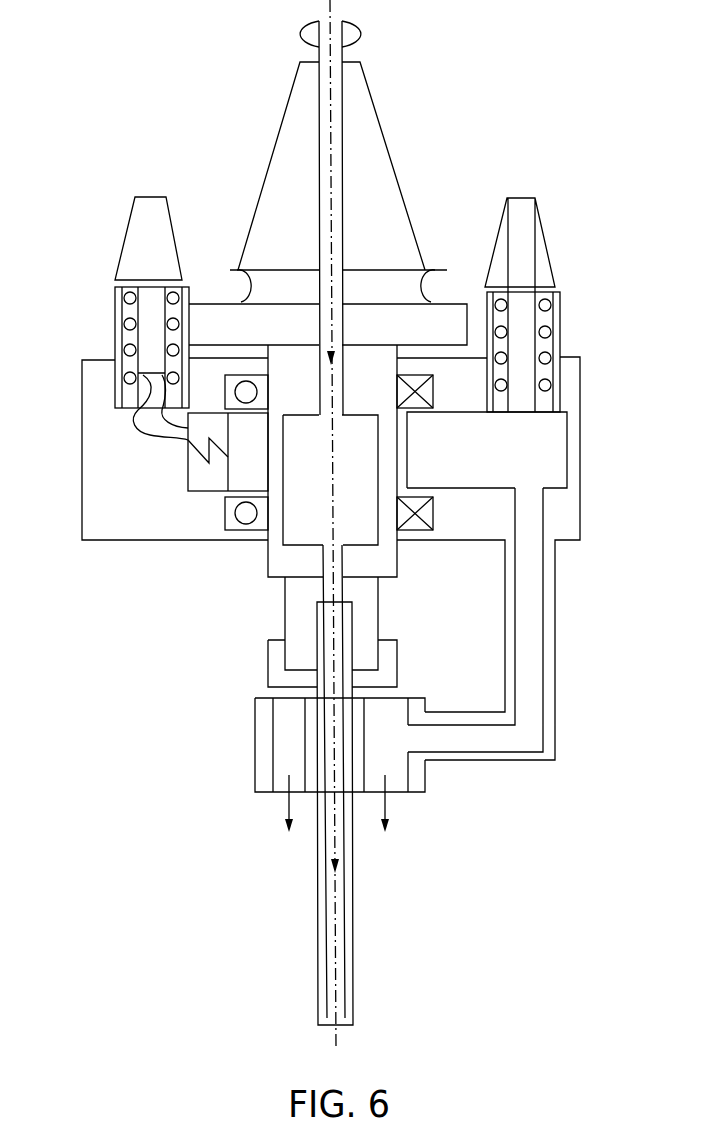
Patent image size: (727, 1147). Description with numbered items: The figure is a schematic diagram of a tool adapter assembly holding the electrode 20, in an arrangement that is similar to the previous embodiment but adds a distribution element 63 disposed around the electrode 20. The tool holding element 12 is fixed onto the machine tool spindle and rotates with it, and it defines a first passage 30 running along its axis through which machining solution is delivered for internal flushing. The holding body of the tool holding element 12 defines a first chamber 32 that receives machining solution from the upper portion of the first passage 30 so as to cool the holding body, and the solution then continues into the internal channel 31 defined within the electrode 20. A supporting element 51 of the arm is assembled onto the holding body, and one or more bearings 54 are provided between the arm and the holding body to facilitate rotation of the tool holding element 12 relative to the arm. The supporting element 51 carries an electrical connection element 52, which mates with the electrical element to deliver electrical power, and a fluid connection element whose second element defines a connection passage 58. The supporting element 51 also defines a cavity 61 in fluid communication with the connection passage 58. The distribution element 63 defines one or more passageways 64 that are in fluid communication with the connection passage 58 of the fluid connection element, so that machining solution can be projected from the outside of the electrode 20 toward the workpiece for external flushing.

The tool holding element 12 is at (382, 125).
The first passage 30 is at (330, 130).
The connection passage 58 is at (527, 233).
The electrical connection element 52 is at (90, 357).
The supporting element 51 is at (82, 448).
The cavity 61 is at (552, 445).
The first chamber 32 is at (297, 483).
The bearing 54 is at (418, 532).
The passageway 64 is at (397, 738).
The distribution element 63 is at (255, 743).
The electrode 20 is at (318, 978).
The internal channel 31 is at (340, 955).